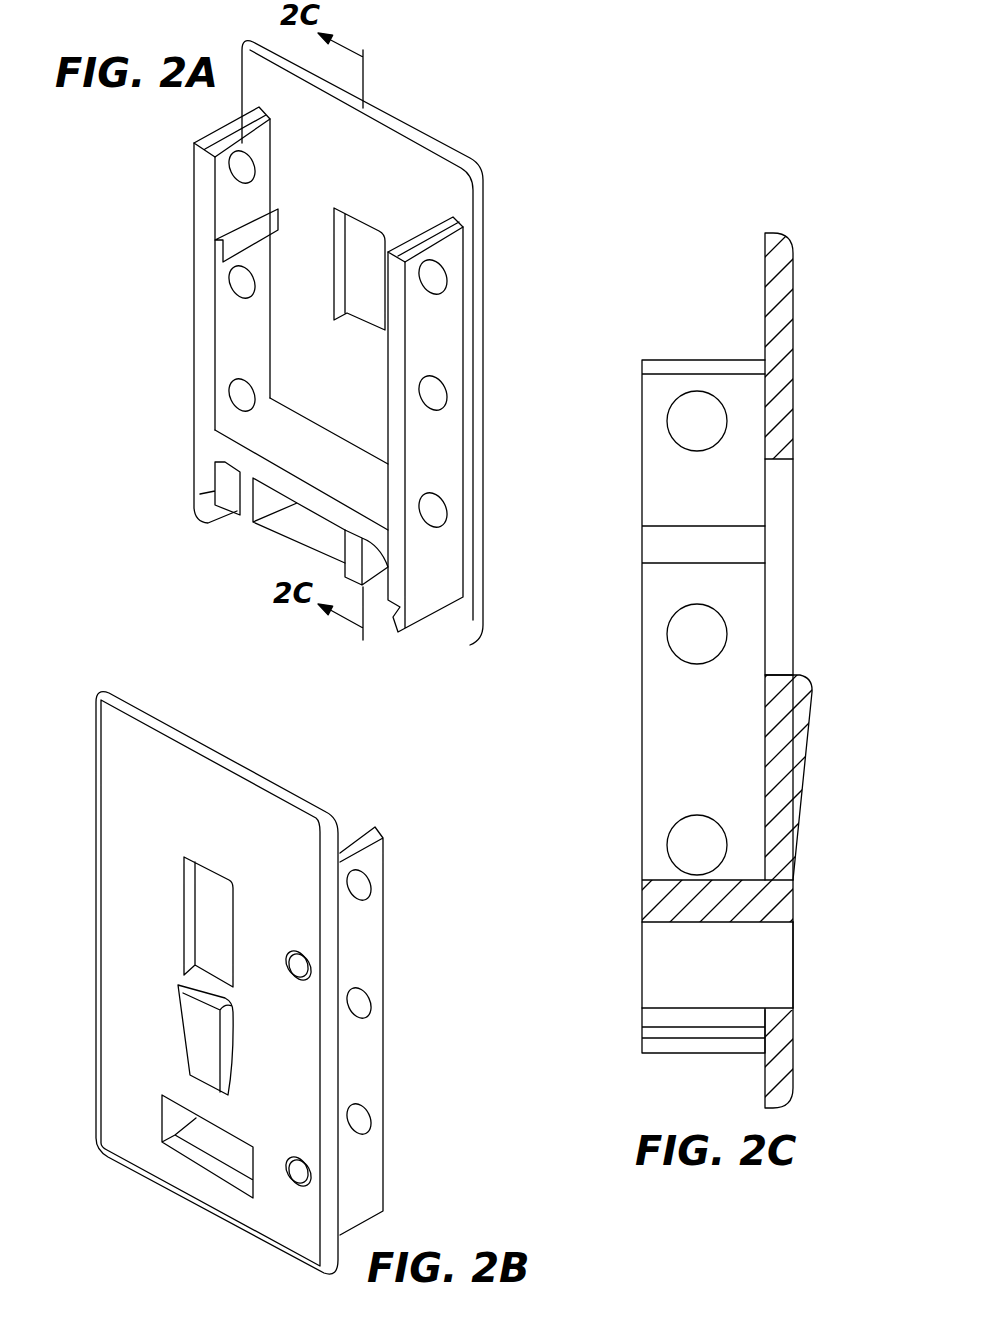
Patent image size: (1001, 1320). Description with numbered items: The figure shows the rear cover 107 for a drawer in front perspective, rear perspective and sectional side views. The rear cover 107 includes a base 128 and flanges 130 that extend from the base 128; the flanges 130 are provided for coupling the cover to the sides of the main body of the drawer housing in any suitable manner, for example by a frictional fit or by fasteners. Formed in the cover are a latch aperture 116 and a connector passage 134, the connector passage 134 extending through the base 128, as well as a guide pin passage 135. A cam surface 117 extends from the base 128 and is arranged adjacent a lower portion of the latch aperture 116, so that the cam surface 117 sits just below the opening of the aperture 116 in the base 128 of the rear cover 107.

In FIG. 2A, the rear cover 107 is at (138, 261).
In FIG. 2B, the rear cover 107 is at (62, 1172).
In FIG. 2C, the rear cover 107 is at (688, 225).
In FIG. 2A, the latch aperture 116 is at (352, 266).
In FIG. 2B, the latch aperture 116 is at (214, 914).
In FIG. 2C, the latch aperture 116 is at (790, 548).
In FIG. 2B, the cam surface 117 is at (197, 1017).
In FIG. 2C, the cam surface 117 is at (813, 689).
In FIG. 2A, the base 128 is at (474, 630).
In FIG. 2B, the base 128 is at (106, 684).
In FIG. 2C, the base 128 is at (778, 290).
In FIG. 2A, the flanges 130 is at (197, 368).
In FIG. 2B, the flanges 130 is at (373, 1050).
In FIG. 2C, the flanges 130 is at (656, 721).
In FIG. 2B, the connector passage 134 is at (232, 1150).
In FIG. 2C, the connector passage 134 is at (776, 975).
In FIG. 2B, the guide pin passage 135 is at (301, 1185).